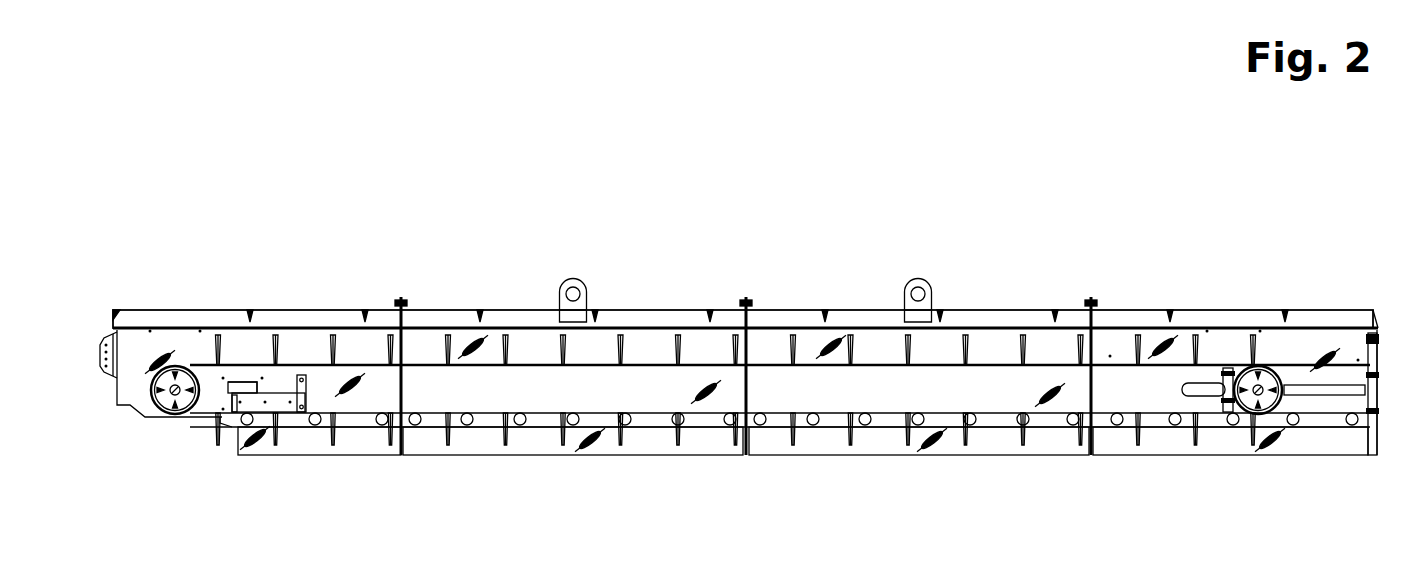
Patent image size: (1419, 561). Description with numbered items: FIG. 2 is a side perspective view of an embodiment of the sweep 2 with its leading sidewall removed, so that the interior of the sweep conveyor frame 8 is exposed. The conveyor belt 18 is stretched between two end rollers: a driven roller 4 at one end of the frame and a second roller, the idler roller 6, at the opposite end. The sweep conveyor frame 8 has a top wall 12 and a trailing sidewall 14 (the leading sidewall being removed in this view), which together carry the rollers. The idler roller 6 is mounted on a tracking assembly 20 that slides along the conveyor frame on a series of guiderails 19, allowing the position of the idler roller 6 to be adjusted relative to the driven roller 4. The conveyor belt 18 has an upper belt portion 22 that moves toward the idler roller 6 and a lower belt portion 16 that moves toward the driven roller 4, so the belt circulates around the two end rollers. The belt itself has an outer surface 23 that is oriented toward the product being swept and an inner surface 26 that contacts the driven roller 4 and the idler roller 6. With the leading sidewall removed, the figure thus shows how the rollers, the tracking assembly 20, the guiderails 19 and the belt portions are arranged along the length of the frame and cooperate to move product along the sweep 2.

The conveyor assembly 2 is at (217, 240).
The drive wheel 4 is at (175, 415).
The idler wheel 6 is at (1270, 372).
The support post 8 is at (402, 297).
The top beam 12 is at (781, 356).
The upper rail 14 is at (657, 362).
The lower plate 16 is at (658, 420).
The lower rail 18 is at (923, 387).
The pin 19 is at (390, 339).
The roller 20 is at (799, 401).
The mounting bracket 22 is at (271, 372).
The mounting plate 23 is at (306, 383).
The motor mount 26 is at (238, 396).